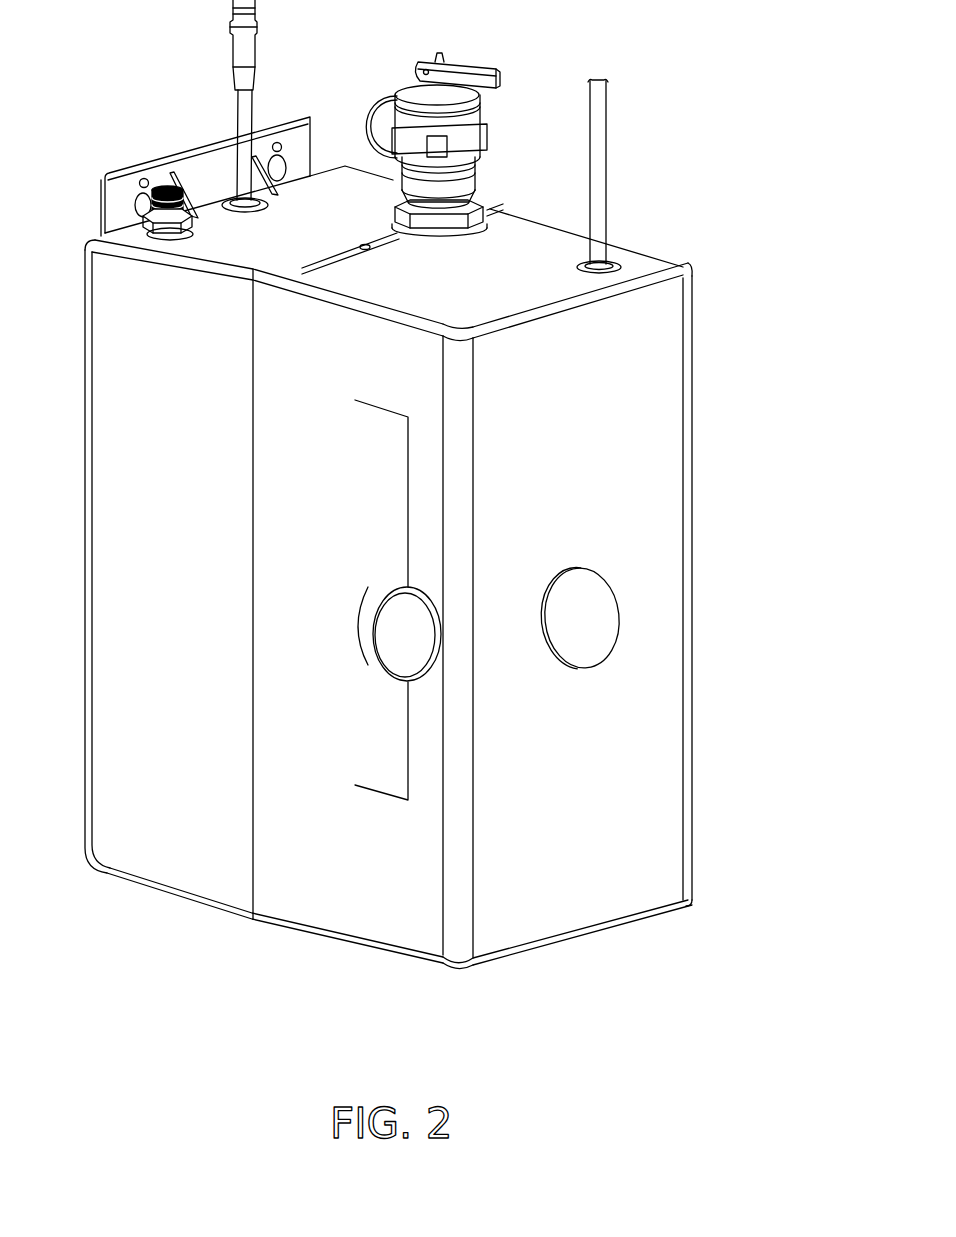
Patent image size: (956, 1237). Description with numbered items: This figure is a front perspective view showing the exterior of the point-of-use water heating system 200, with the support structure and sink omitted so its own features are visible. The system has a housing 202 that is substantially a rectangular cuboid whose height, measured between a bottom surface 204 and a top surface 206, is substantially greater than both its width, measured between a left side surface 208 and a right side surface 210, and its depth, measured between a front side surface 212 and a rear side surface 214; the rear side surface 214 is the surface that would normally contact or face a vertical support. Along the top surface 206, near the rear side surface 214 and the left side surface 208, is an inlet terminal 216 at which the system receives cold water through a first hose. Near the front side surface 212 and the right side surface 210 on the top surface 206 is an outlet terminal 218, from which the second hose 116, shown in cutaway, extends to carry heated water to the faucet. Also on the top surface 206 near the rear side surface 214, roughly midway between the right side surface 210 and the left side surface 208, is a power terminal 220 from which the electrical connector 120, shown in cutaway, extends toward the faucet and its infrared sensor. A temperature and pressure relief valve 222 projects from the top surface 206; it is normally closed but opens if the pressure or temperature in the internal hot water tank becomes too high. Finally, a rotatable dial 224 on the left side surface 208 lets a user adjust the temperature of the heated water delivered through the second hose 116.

The point-of-use water heating system 200 is at (434, 492).
The housing 202 is at (420, 555).
The bottom surface 204 is at (547, 953).
The top surface 206 is at (513, 238).
The left side surface 208 is at (138, 867).
The right side surface 210 is at (556, 215).
The front side surface 212 is at (598, 450).
The rear side surface 214 is at (161, 150).
The inlet terminal 216 is at (150, 221).
The outlet terminal 218 is at (610, 261).
The power terminal 220 is at (262, 217).
The temperature and pressure relief valve 222 is at (464, 52).
The rotatable dial 224 is at (381, 580).
The electrical connector 120 is at (251, 108).
The second hose 116 is at (606, 124).